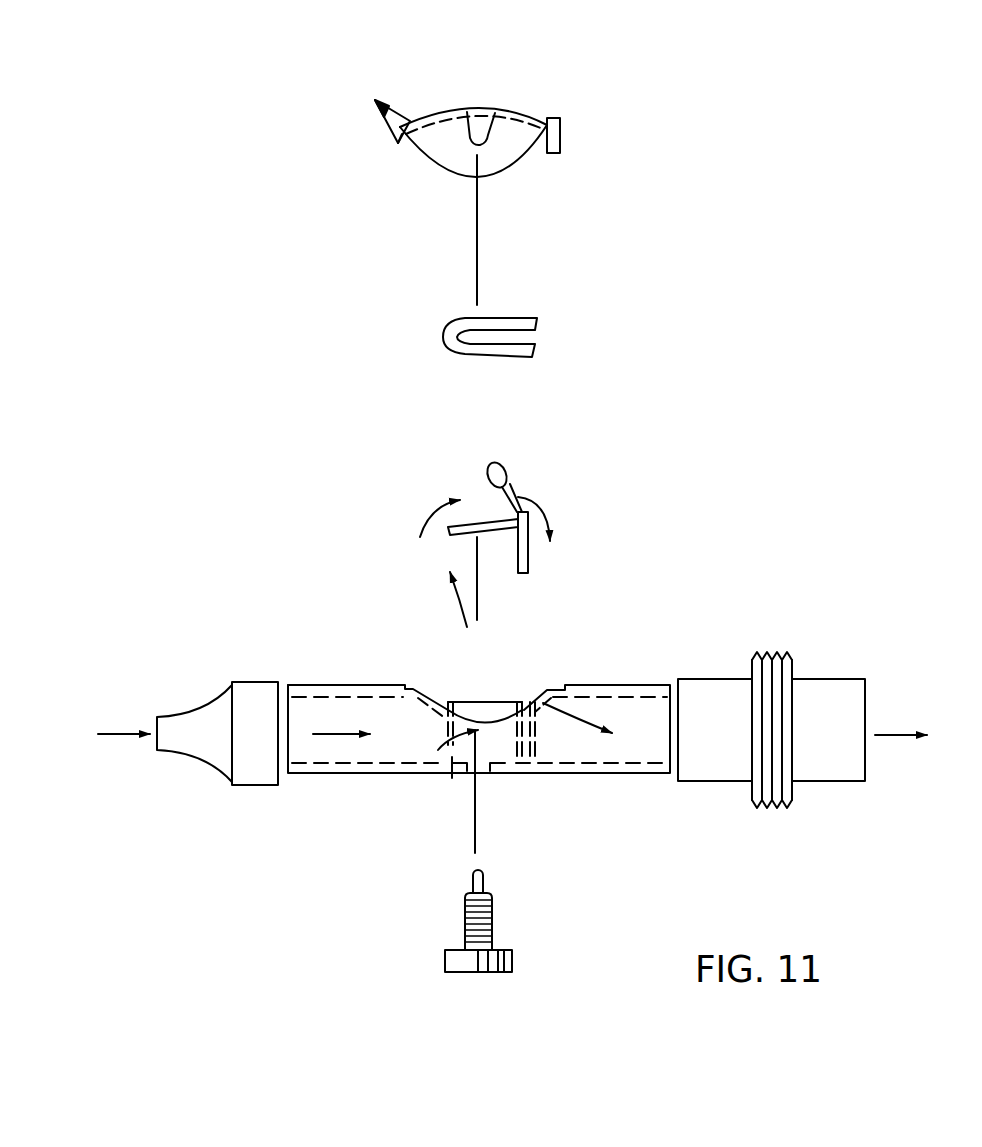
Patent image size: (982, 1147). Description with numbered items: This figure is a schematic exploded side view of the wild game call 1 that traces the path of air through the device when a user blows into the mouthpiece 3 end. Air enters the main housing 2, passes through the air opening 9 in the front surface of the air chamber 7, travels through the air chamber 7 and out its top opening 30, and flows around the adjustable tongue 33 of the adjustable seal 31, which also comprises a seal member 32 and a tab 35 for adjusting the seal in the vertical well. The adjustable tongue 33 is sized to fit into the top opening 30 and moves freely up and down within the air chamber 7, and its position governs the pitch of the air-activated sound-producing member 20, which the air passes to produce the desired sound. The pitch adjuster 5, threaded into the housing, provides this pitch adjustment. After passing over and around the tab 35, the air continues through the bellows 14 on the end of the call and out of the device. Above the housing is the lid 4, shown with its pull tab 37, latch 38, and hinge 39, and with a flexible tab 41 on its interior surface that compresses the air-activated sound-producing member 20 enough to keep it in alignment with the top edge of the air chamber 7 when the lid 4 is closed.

The wild game call 1 is at (660, 644).
The main housing 2 is at (340, 697).
The mouthpiece 3 is at (250, 682).
The lid 4 is at (597, 87).
The pitch adjuster 5 is at (512, 930).
The air chamber 7 is at (473, 703).
The air opening 9 is at (452, 756).
The bellows 14 is at (825, 665).
The air-activated sound-producing member 20 is at (540, 325).
The top opening 30 is at (503, 697).
The adjustable seal 31 is at (632, 495).
The seal member 32 is at (530, 563).
The adjustable tongue 33 is at (478, 518).
The tab 35 is at (522, 487).
The pull tab 37 is at (395, 98).
The latch 38 is at (400, 133).
The hinge 39 is at (560, 135).
The flexible tab 41 is at (480, 107).